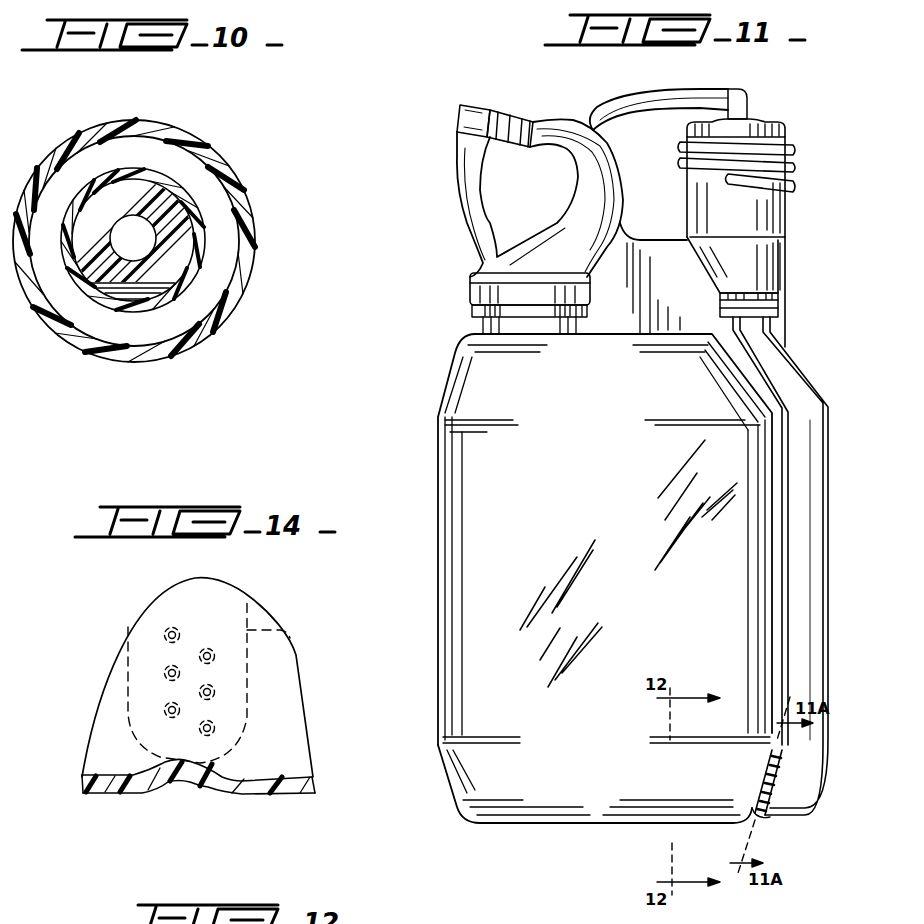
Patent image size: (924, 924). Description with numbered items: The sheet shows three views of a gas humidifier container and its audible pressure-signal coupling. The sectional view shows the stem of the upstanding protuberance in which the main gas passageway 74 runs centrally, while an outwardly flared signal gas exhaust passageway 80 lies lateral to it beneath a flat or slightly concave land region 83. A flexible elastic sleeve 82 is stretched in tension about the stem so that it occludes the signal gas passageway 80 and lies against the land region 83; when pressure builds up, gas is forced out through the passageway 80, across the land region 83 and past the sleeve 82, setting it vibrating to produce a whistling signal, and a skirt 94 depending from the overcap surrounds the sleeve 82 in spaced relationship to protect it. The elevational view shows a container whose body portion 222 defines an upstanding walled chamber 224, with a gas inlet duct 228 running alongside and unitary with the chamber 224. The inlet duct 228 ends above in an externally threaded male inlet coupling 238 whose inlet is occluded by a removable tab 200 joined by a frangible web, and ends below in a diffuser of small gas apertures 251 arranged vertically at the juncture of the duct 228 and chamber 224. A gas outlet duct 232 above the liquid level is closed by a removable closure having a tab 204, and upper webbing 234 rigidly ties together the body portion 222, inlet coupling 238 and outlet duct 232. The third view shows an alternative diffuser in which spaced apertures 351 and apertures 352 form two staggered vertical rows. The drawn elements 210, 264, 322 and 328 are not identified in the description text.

In FIG. 10, the main gas passageway 74 is at (150, 216).
In FIG. 10, the signal gas exhaust passageway 80 is at (120, 250).
In FIG. 10, the flexible elastic sleeve 82 is at (147, 177).
In FIG. 10, the land region 83 is at (160, 282).
In FIG. 10, the skirt 94 is at (255, 256).
In FIG. 11, the removable tab 200 is at (683, 100).
In FIG. 11, the tab 204 is at (467, 168).
In FIG. 11, the pour spout 210 is at (510, 116).
In FIG. 11, the body portion 222 is at (440, 383).
In FIG. 11, the walled chamber 224 is at (565, 549).
In FIG. 11, the gas inlet duct 228 is at (810, 468).
In FIG. 11, the gas outlet duct 232 is at (587, 221).
In FIG. 11, the upper webbing 234 is at (693, 302).
In FIG. 11, the male inlet coupling 238 is at (800, 238).
In FIG. 11, the gas apertures 251 is at (770, 757).
In FIG. 11, the threaded cap 264 is at (794, 158).
In FIG. 14, the base flange 322 is at (282, 795).
In FIG. 14, the cover 328 is at (288, 634).
In FIG. 14, the spaced apertures 351 is at (168, 707).
In FIG. 14, the spaced apertures 352 is at (211, 728).